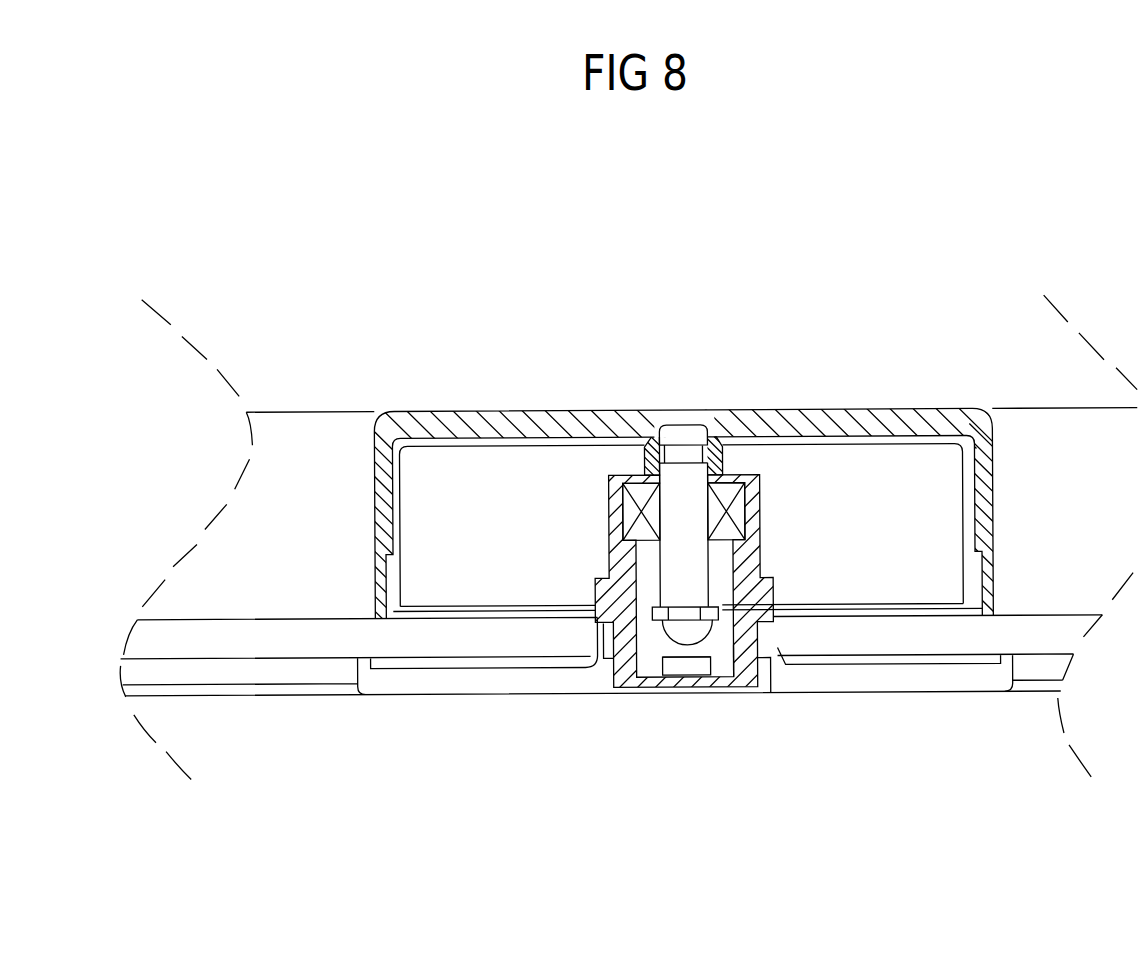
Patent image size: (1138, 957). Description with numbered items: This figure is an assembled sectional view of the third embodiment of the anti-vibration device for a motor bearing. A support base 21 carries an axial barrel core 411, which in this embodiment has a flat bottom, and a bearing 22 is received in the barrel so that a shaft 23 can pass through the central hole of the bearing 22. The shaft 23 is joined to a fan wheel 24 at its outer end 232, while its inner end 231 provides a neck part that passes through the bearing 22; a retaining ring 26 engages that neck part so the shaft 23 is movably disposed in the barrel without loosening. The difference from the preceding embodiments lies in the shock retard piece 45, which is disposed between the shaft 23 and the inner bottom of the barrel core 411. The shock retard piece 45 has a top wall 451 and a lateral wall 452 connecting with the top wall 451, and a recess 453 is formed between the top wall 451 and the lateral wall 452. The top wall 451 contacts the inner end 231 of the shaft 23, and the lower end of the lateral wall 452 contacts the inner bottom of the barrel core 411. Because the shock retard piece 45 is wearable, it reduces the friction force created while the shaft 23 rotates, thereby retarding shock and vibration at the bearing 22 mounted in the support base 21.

The support base 21 is at (948, 678).
The bearing 22 is at (740, 510).
The shaft 23 is at (693, 487).
The inner end 231 is at (680, 628).
The outer end 232 is at (687, 437).
The fan wheel 24 is at (535, 410).
The retaining ring 26 is at (658, 621).
The axial barrel core 411 is at (618, 478).
The shock retard piece 45 is at (781, 710).
The top wall 451 is at (700, 650).
The lateral wall 452 is at (725, 663).
The recess 453 is at (692, 676).